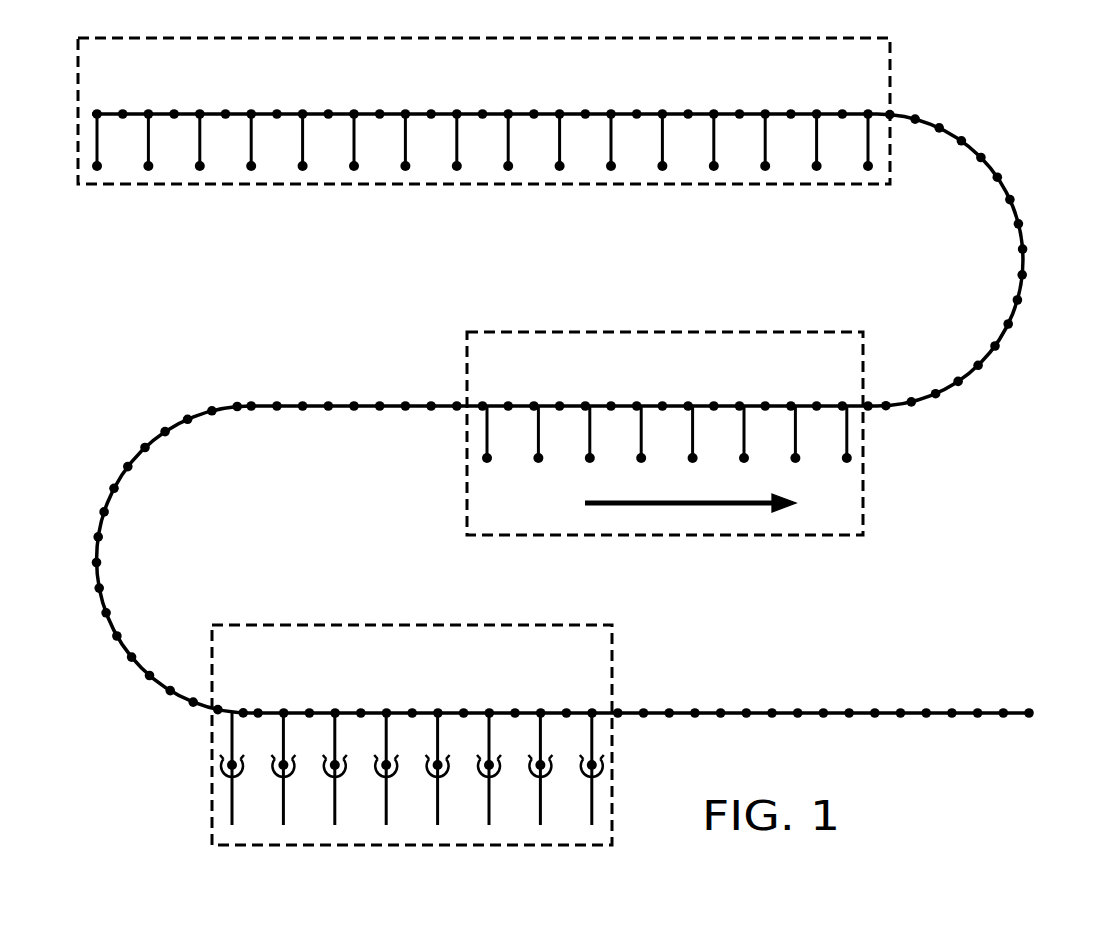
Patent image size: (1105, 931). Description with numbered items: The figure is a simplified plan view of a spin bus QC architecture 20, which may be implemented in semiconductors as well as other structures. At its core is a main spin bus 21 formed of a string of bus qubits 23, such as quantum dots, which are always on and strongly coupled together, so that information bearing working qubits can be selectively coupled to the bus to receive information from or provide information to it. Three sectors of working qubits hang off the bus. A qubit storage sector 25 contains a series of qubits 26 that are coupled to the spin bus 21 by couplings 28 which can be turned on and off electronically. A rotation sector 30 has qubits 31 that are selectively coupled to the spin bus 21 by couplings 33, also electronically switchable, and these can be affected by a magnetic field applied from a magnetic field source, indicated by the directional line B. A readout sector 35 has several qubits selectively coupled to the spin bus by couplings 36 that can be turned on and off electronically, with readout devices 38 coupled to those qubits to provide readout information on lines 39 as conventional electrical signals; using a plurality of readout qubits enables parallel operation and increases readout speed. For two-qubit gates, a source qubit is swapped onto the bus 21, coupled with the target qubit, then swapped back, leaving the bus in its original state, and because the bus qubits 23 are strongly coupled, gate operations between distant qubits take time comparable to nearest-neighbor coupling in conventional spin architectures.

The spin bus QC architecture 20 is at (580, 441).
The main spin bus 21 is at (319, 392).
The bus qubits 23 is at (226, 109).
The qubit storage sector 25 is at (484, 143).
The qubits 26 is at (404, 170).
The couplings 28 is at (250, 142).
The rotation sector 30 is at (665, 413).
The qubits 31 is at (690, 462).
The couplings 33 is at (640, 440).
The readout sector 35 is at (412, 714).
The couplings 36 is at (334, 744).
The readout devices 38 is at (280, 780).
The lines 39 is at (388, 792).